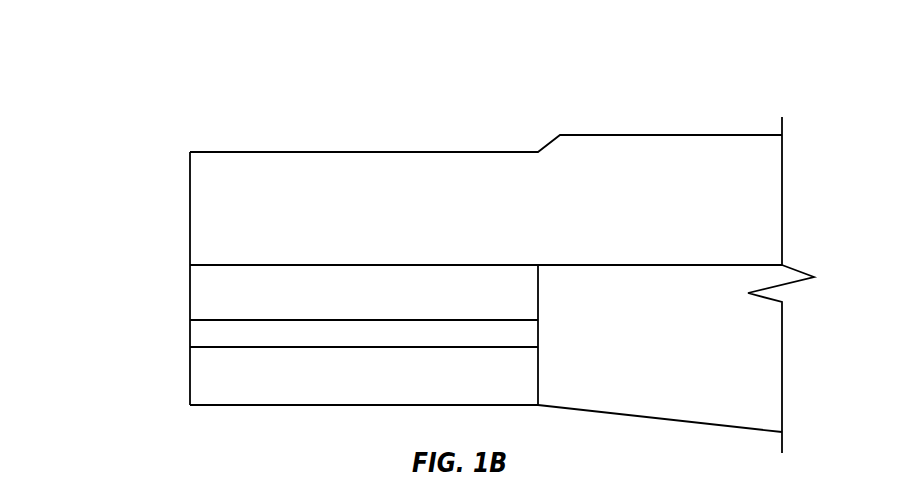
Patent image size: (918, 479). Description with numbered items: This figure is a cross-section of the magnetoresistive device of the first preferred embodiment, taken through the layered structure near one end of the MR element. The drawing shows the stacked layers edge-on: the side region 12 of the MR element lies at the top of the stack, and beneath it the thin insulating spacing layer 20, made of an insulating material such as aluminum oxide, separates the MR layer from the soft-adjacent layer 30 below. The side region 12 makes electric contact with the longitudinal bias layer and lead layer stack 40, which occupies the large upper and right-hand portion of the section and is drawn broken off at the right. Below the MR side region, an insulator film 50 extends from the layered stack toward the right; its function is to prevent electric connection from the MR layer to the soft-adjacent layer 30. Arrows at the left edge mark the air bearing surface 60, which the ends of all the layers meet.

The side region 12 is at (427, 280).
The insulating spacing layer 20 is at (300, 328).
The soft-adjacent layer (SAL) 30 is at (293, 397).
The longitudinal bias layer and lead layer stack 40 is at (733, 223).
The insulator film 50 is at (610, 412).
The air bearing surface (ABS) 60 is at (186, 205).